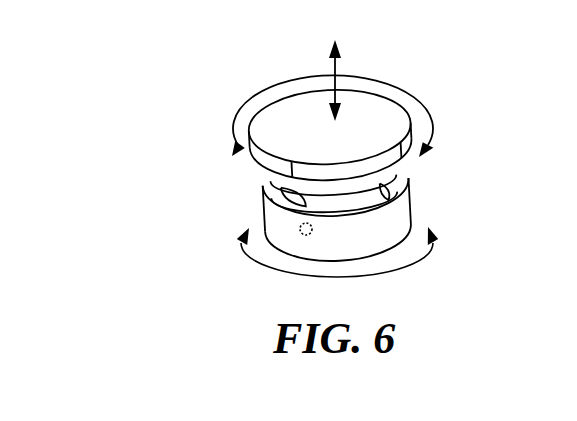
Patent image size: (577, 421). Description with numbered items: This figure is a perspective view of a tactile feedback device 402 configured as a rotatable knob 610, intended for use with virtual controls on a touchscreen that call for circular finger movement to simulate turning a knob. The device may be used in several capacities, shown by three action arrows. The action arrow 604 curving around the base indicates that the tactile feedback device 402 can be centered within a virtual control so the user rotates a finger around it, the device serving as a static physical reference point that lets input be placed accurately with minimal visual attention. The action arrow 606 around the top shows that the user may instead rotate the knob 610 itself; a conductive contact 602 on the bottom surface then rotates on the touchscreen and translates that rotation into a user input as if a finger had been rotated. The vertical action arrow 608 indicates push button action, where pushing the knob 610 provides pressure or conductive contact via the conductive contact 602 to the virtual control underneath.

The tactile feedback device 402 is at (458, 72).
The conductive contact 602 is at (300, 226).
The action arrow 604 is at (419, 266).
The action arrow 606 is at (433, 120).
The action arrow 608 is at (332, 68).
The rotatable knob 610 is at (348, 152).